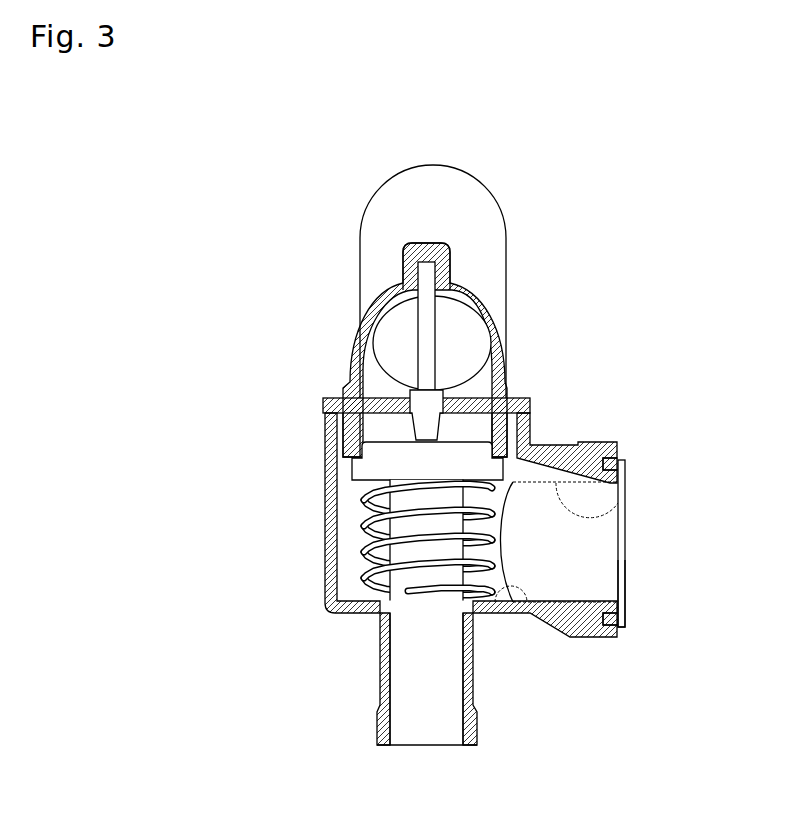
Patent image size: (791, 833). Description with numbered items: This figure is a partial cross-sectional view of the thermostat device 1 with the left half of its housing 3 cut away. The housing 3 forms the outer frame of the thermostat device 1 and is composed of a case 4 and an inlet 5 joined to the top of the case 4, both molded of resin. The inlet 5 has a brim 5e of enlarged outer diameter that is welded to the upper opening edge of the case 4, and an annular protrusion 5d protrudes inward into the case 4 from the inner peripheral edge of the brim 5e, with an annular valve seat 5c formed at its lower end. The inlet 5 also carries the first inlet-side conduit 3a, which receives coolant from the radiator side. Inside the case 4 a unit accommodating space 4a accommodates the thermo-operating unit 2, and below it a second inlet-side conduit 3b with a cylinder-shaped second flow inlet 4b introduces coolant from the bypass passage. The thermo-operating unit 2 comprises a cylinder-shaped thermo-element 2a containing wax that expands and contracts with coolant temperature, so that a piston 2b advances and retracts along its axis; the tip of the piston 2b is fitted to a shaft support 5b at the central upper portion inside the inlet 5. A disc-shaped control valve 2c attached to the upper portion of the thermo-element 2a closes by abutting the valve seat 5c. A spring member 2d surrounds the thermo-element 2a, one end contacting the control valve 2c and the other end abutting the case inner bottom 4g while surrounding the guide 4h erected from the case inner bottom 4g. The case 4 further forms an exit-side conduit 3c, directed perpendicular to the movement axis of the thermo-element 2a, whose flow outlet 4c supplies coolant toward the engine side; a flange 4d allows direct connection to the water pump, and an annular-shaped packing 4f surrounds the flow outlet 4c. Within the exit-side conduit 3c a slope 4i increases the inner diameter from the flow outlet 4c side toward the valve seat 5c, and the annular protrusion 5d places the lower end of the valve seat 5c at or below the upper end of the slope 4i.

The thermostat device 1 is at (590, 208).
The thermo-operating unit 2 is at (352, 542).
The thermo-element 2a is at (370, 500).
The piston 2b is at (430, 356).
The control valve 2c is at (462, 442).
The spring member 2d is at (425, 600).
The housing 3 is at (479, 471).
The first inlet-side conduit 3a is at (400, 170).
The second inlet-side conduit 3b is at (407, 747).
The exit-side conduit 3c is at (625, 553).
The case 4 is at (597, 640).
The unit accommodating space 4a is at (343, 582).
The second flow inlet 4b is at (428, 728).
The flow outlet 4c is at (600, 532).
The flange 4d is at (620, 632).
The annular-shaped packing 4f is at (625, 578).
The case inner bottom 4g is at (530, 605).
The guide 4h is at (372, 565).
The slope 4i is at (600, 510).
The inlet 5 is at (507, 287).
The shaft support 5b is at (400, 300).
The annular valve seat 5c is at (352, 460).
The annular protrusion 5d is at (322, 420).
The brim 5e is at (520, 396).